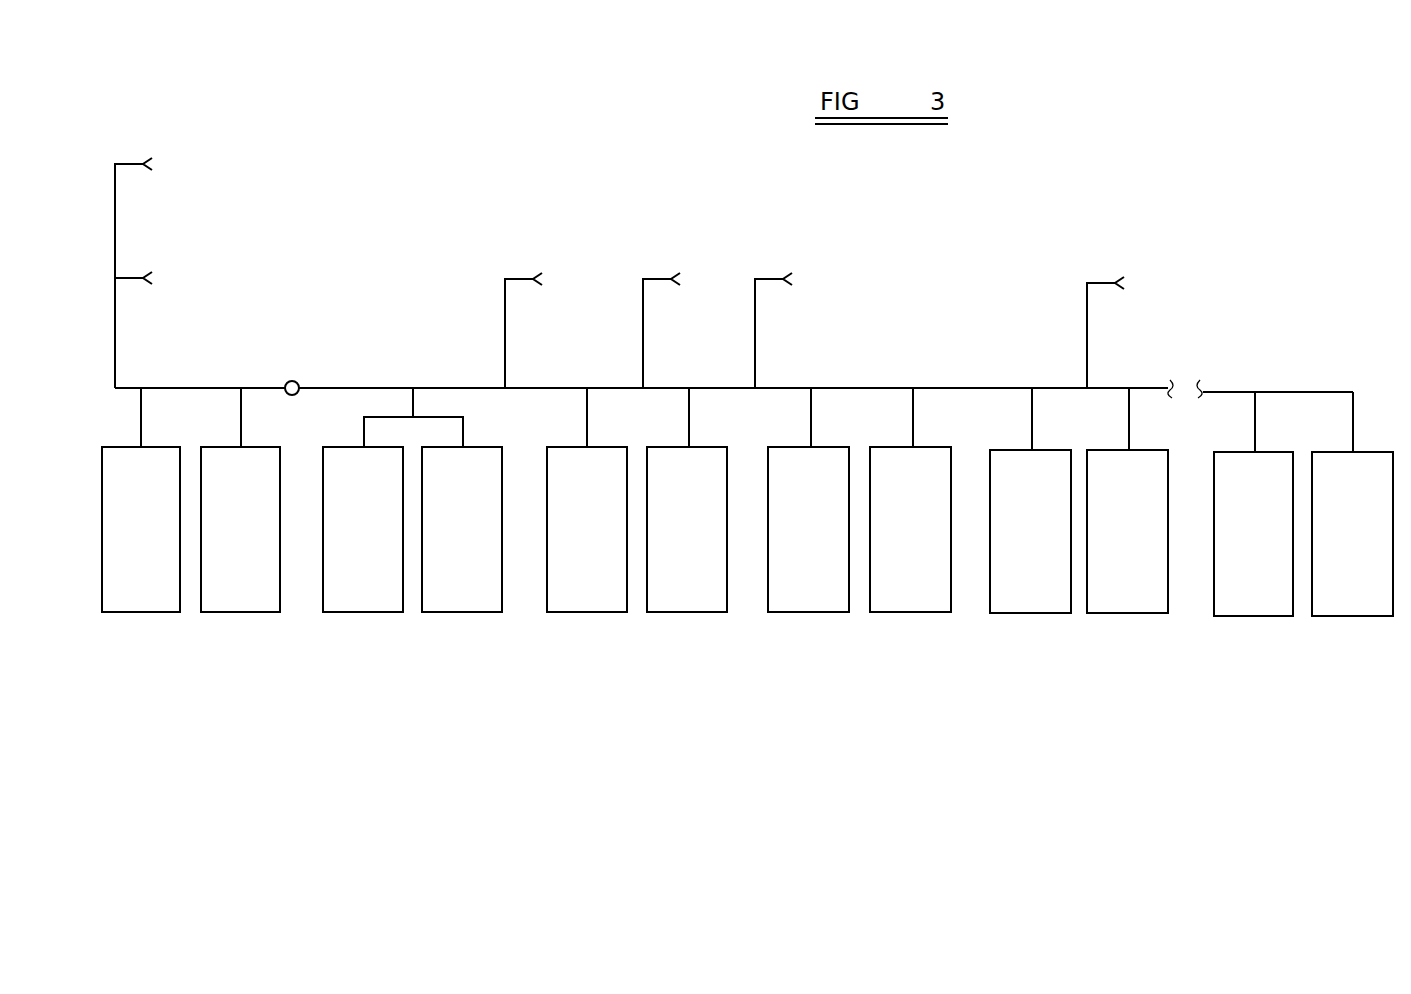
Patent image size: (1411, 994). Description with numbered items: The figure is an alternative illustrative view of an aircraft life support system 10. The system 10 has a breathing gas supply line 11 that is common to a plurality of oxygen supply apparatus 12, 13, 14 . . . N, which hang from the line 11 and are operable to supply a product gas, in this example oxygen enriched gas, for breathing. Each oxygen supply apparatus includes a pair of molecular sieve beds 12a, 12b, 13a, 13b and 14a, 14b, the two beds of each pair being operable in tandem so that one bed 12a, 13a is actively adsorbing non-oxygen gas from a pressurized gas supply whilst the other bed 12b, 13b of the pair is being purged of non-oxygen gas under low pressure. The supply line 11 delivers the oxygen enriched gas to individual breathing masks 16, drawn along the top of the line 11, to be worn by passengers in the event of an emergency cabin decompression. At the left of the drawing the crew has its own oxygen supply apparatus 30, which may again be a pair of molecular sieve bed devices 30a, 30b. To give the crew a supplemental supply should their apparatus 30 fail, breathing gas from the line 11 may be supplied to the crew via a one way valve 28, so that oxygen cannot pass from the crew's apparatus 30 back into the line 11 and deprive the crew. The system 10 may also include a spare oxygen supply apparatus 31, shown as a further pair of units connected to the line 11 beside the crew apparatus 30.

The aircraft life support system 10 is at (313, 297).
The breathing gas supply line 11 is at (473, 387).
The oxygen supply apparatus 12 is at (638, 616).
The molecular sieve bed 12a is at (627, 522).
The molecular sieve bed 12b is at (727, 522).
The oxygen supply apparatus 13 is at (858, 618).
The molecular sieve bed 13a is at (849, 522).
The molecular sieve bed 13b is at (951, 522).
The oxygen supply apparatus 14 is at (1077, 618).
The molecular sieve bed 14a is at (1071, 522).
The molecular sieve bed 14b is at (1168, 522).
The breathing mask 16 is at (515, 279).
The one way valve 28 is at (292, 395).
The crew oxygen supply apparatus 30 is at (183, 622).
The molecular sieve bed device 30a is at (180, 522).
The molecular sieve bed device 30b is at (280, 522).
The spare oxygen supply apparatus 31 is at (400, 618).
The oxygen supply apparatus N is at (1302, 623).